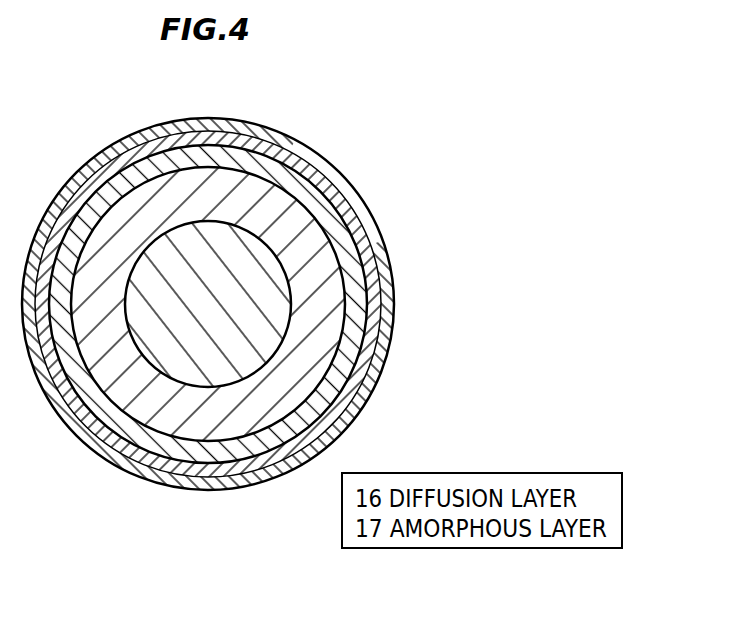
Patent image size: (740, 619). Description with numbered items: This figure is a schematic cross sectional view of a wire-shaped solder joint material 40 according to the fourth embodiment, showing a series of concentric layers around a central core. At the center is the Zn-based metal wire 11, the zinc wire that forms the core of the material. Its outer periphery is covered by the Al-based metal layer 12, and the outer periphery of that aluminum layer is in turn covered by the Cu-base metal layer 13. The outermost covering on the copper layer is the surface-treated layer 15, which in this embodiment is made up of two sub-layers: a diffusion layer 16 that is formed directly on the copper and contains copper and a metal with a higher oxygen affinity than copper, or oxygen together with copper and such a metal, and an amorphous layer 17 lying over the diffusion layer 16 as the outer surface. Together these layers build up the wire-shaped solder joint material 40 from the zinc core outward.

The wire-shaped solder joint material 40 is at (360, 102).
The surface-treated layer 15 is at (347, 304).
The diffusion layer 16 is at (325, 192).
The amorphous layer 17 is at (352, 202).
The Cu-base metal layer 13 is at (353, 272).
The Al-based metal layer 12 is at (320, 303).
The Zn-based metal wire 11 is at (227, 327).